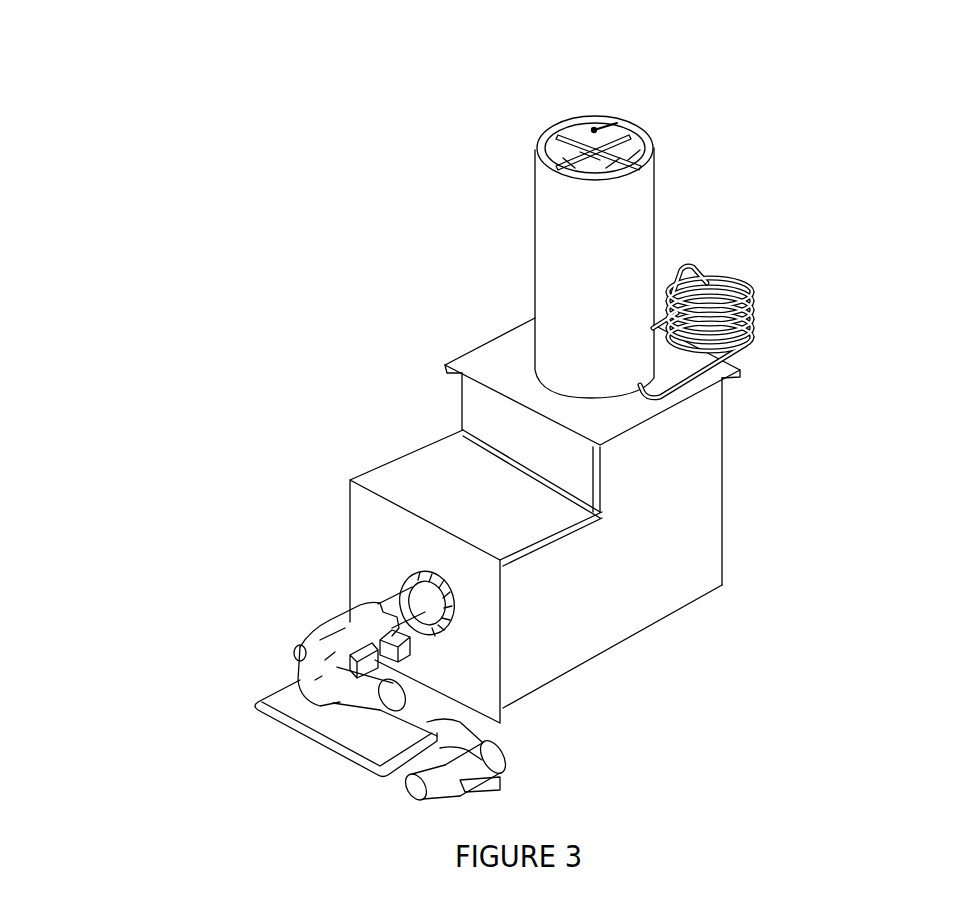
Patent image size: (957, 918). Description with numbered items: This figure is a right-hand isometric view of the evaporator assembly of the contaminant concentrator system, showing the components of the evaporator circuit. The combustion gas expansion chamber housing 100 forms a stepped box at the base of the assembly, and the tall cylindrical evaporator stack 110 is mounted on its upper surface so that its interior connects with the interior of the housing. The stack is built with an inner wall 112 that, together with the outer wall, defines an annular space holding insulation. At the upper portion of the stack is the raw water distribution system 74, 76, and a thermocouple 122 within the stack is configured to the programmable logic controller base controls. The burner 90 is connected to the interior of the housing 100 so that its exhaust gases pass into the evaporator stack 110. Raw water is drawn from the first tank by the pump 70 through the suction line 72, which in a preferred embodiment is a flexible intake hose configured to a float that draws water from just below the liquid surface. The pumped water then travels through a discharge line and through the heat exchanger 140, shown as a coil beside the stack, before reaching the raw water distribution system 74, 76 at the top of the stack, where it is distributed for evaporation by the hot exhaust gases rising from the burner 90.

The combustion gas expansion chamber housing 100 is at (622, 555).
The evaporator stack 110 is at (593, 300).
The inner wall 112 is at (647, 137).
The thermocouple 122 is at (620, 120).
The raw water distribution system 76 is at (548, 166).
The raw water distribution system 74 is at (293, 733).
The heat exchanger 140 is at (748, 272).
The burner 90 is at (350, 622).
The suction line 72 is at (437, 725).
The pump 70 is at (443, 785).